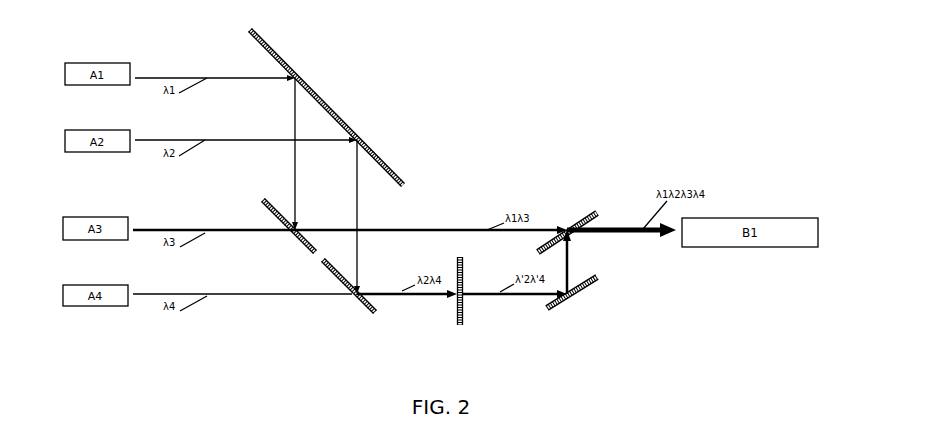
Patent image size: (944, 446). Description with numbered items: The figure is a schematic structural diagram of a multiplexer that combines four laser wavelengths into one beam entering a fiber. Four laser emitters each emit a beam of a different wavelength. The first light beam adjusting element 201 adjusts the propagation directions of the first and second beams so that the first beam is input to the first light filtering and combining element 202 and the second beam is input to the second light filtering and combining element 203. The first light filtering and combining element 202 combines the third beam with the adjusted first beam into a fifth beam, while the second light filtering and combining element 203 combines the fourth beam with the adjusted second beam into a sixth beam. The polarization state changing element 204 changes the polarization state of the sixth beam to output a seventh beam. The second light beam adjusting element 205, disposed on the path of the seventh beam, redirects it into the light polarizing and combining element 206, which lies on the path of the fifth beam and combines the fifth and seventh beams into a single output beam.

The first light beam adjusting element 201 is at (404, 184).
The first light filtering and combining element 202 is at (262, 201).
The second light filtering and combining element 203 is at (324, 261).
The polarization state changing element 204 is at (465, 263).
The second light beam adjusting element 205 is at (597, 278).
The light polarizing and combining element 206 is at (597, 214).